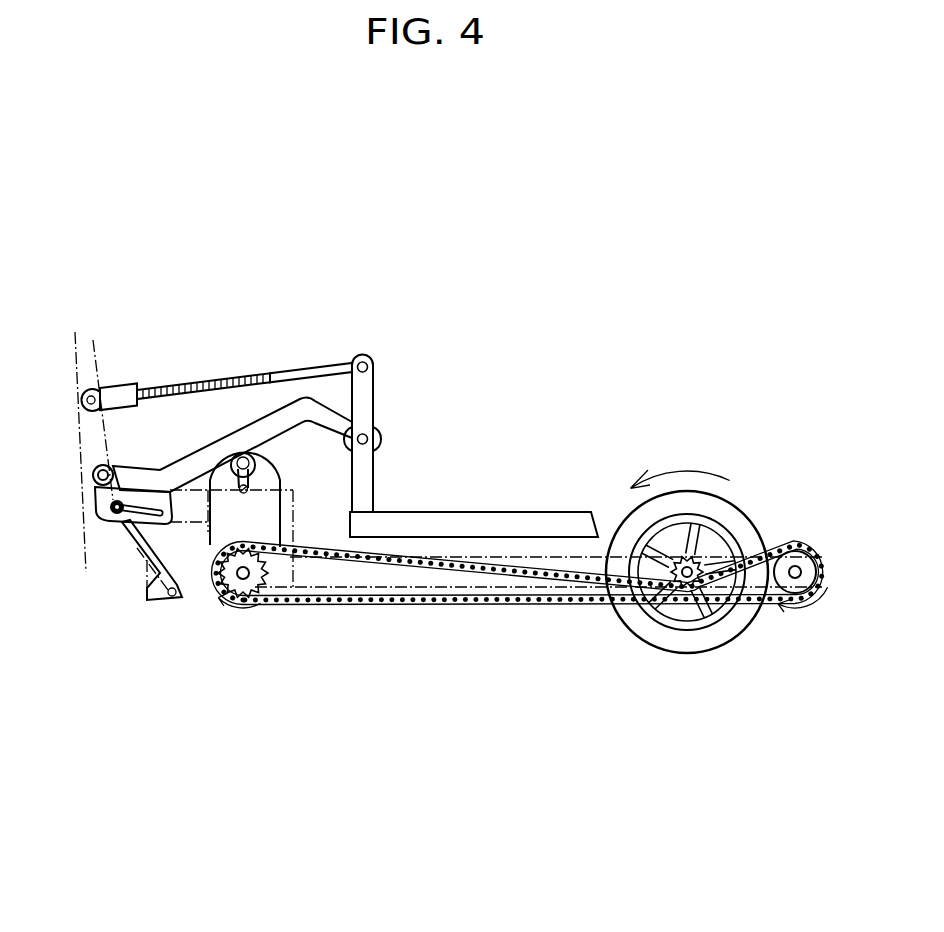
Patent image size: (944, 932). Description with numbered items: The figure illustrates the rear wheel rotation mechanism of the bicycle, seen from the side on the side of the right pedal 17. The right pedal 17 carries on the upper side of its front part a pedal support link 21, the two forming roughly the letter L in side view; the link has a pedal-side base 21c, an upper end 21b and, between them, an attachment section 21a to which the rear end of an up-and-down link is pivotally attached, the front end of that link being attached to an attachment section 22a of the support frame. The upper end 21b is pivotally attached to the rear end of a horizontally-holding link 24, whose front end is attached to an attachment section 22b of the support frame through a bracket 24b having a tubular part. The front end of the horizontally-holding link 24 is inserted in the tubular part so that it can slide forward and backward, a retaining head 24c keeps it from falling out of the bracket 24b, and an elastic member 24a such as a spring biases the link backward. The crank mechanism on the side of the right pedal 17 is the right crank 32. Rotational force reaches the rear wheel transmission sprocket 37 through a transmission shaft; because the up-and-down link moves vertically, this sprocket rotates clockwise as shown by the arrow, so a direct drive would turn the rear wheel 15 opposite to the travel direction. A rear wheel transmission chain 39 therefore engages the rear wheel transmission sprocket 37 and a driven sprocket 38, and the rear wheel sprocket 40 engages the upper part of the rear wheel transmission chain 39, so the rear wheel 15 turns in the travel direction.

The rear wheel 15 is at (747, 520).
The right pedal 17 is at (470, 522).
The pedal support link 21 is at (367, 400).
The attachment section 21a is at (373, 430).
The upper end 21b is at (370, 360).
The pedal-side base 21c is at (365, 503).
The attachment section 22a is at (93, 498).
The attachment section 22b is at (73, 410).
The horizontally-holding link 24 is at (297, 371).
The elastic member 24a is at (222, 383).
The bracket 24b is at (125, 390).
The retaining head 24c is at (102, 388).
The right crank 32 is at (210, 545).
The rear wheel transmission sprocket 37 is at (262, 582).
The driven sprocket 38 is at (788, 582).
The rear wheel transmission chain 39 is at (513, 602).
The rear wheel sprocket 40 is at (668, 560).